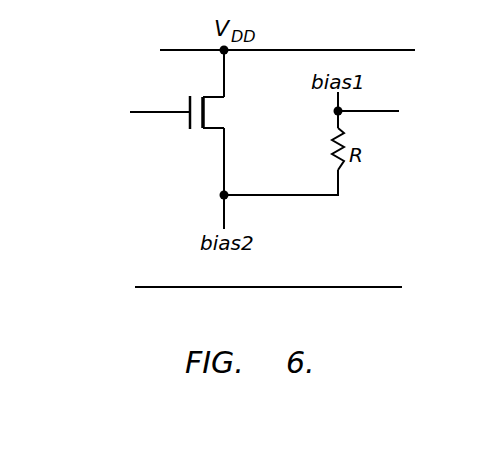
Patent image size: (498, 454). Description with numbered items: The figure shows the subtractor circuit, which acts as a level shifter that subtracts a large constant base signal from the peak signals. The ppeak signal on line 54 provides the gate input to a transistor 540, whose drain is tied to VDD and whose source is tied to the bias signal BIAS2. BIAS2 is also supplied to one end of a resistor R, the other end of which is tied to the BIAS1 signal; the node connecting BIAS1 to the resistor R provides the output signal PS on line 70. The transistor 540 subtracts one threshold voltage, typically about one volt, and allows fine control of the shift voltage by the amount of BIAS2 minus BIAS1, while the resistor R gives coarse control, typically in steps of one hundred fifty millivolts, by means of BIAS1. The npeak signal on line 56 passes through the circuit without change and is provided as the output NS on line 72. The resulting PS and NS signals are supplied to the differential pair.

The transistor 540 is at (206, 120).
The line 54 is at (138, 113).
The line 56 is at (138, 288).
The line 70 is at (382, 111).
The line 72 is at (372, 287).